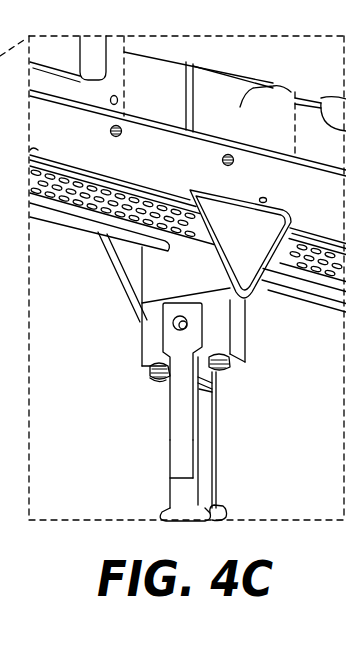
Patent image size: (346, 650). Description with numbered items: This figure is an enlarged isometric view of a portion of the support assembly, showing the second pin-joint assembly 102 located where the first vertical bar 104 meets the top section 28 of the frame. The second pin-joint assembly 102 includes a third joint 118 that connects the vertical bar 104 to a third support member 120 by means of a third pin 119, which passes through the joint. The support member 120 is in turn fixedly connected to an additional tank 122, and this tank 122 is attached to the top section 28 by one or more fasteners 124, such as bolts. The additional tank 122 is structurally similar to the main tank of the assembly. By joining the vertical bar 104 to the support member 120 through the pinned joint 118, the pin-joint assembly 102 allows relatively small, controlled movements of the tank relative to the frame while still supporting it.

The top section 28 is at (276, 90).
The second pin-joint assembly 102 is at (277, 448).
The first vertical bar 104 is at (207, 503).
The third joint 118 is at (180, 407).
The third pin 119 is at (186, 320).
The third support member 120 is at (170, 280).
The additional tank 122 is at (97, 193).
The fasteners 124 is at (162, 385).